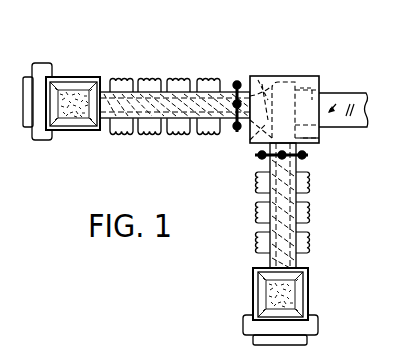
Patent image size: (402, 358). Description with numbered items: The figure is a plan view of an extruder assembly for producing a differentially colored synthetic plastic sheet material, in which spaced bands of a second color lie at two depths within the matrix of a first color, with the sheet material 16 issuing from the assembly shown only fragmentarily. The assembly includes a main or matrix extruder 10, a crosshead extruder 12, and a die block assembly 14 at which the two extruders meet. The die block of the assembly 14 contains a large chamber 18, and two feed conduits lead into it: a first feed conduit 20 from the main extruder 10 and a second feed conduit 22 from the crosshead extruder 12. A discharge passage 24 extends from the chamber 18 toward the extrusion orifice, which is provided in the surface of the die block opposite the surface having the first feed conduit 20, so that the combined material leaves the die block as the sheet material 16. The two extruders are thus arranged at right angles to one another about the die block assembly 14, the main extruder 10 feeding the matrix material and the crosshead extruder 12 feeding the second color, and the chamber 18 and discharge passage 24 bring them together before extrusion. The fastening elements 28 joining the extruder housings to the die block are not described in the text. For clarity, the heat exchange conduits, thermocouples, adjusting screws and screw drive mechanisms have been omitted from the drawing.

The main or matrix extruder 10 is at (78, 76).
The crosshead extruder 12 is at (310, 290).
The die block assembly 14 is at (321, 146).
The sheet material 16 is at (350, 92).
The chamber 18 is at (285, 82).
The first feed conduit 20 is at (262, 78).
The second feed conduit 22 is at (320, 141).
The discharge passage 24 is at (308, 78).
The coupling bolts 28 is at (251, 143).